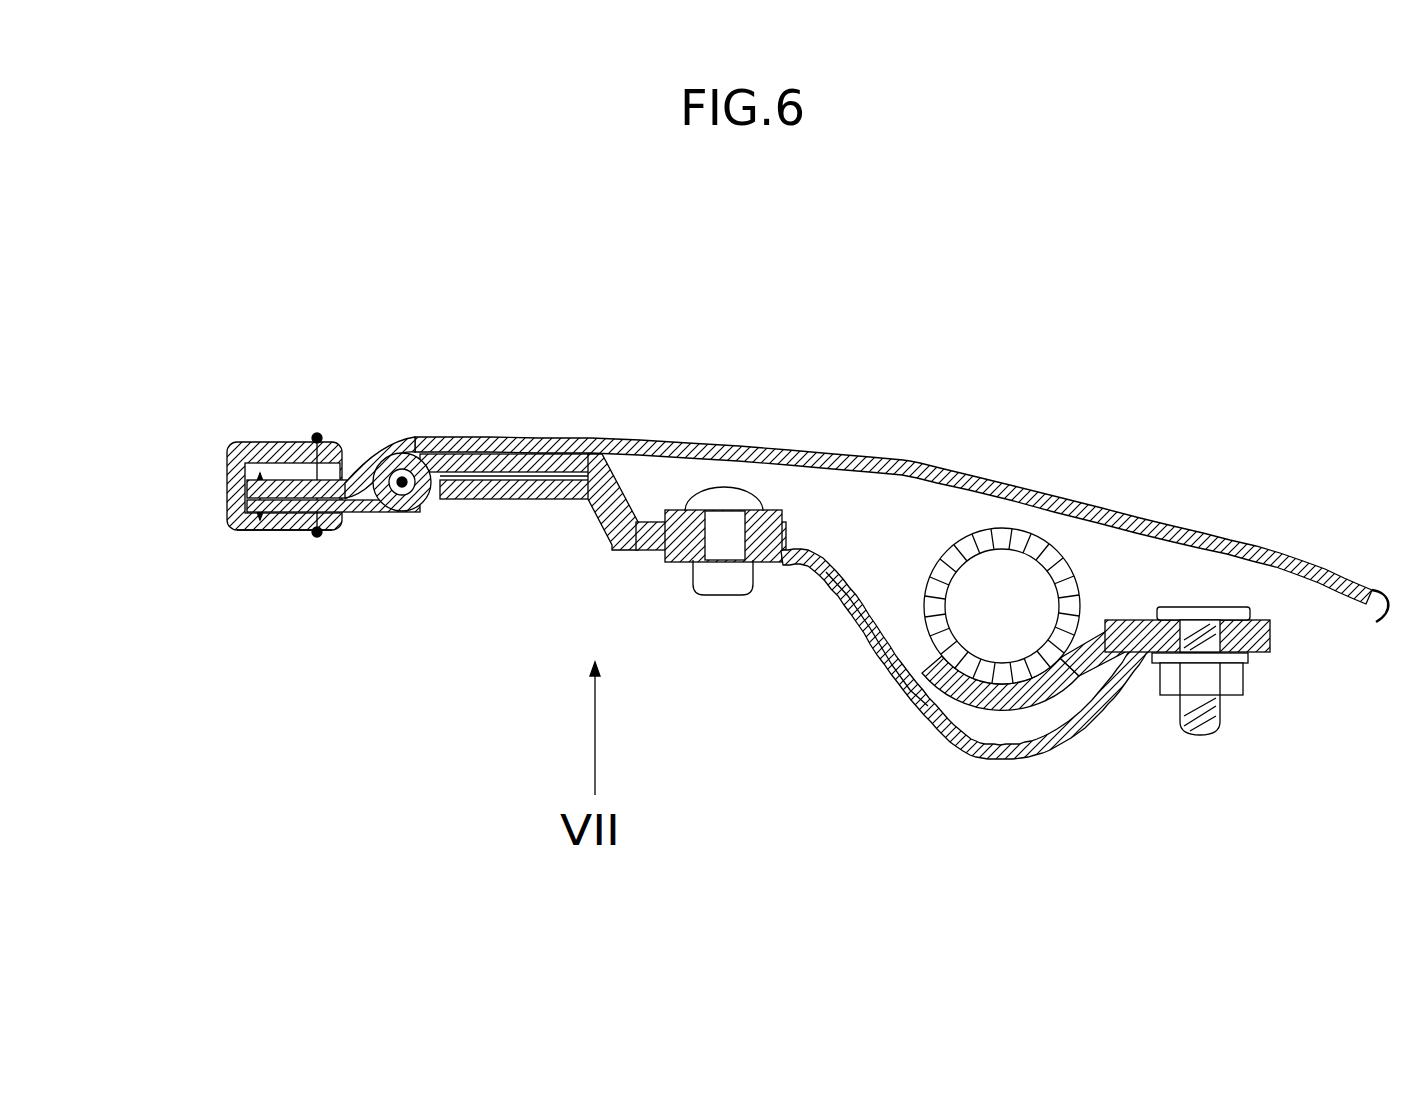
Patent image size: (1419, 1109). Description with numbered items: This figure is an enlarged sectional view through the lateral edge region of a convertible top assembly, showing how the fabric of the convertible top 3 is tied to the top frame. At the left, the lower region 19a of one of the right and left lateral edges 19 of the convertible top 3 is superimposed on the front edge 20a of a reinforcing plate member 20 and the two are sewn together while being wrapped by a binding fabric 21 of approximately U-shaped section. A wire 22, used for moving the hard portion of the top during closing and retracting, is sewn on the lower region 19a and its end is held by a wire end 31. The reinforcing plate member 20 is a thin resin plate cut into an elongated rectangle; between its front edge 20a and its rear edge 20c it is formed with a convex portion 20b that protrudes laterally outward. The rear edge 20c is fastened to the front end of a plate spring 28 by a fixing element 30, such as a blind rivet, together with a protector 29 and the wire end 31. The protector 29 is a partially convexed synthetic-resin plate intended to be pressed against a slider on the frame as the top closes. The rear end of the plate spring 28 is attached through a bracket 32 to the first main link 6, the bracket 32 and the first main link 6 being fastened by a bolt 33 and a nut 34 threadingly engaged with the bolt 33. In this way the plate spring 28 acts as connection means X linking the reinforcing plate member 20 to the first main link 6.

The convertible top 3 is at (1298, 558).
The first main link 6 is at (980, 528).
The lateral edge 19 is at (403, 470).
The lower region 19a is at (235, 530).
The reinforcing plate member 20 is at (390, 515).
The front edge 20a is at (290, 517).
The convex portion 20b is at (524, 468).
The rear edge 20c is at (661, 548).
The binding fabric 21 is at (233, 443).
The wire 22 is at (388, 445).
The plate spring 28 is at (1000, 755).
The protector 29 is at (497, 492).
The fixing element 30 is at (730, 498).
The wire end 31 is at (577, 462).
The bracket 32 is at (1105, 622).
The bolt 33 is at (1197, 608).
The nut 34 is at (1243, 688).